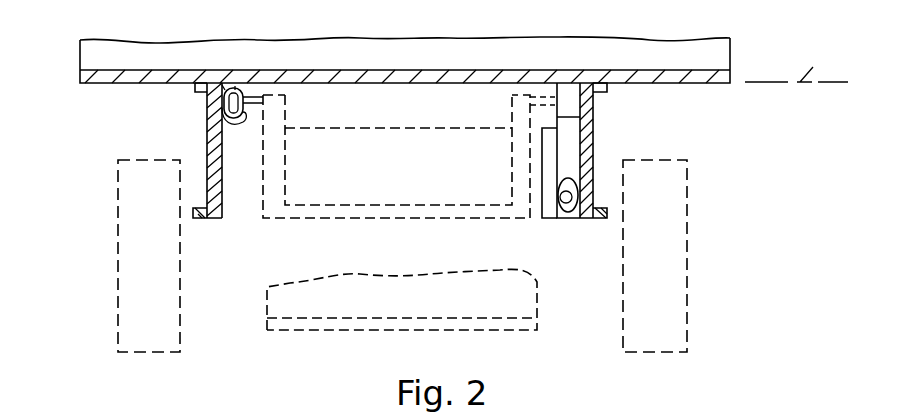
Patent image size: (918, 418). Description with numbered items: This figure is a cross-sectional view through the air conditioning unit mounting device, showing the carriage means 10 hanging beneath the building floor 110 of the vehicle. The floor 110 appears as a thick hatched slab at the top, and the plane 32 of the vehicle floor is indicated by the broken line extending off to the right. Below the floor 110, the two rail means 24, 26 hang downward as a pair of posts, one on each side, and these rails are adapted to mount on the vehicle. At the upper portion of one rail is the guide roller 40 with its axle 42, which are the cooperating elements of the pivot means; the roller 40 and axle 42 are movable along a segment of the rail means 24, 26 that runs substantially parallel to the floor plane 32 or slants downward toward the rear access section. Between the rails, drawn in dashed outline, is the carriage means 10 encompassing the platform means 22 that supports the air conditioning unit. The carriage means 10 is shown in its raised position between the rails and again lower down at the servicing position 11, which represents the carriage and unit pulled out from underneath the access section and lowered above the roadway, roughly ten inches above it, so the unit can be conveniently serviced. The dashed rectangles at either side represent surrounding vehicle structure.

The carriage means 10 is at (262, 212).
The servicing position 11 is at (267, 293).
The platform means 22 is at (334, 205).
The rail means 24 is at (565, 213).
The rail means 26 is at (237, 126).
The plane of the vehicle floor 32 is at (796, 64).
The guide roller 40 is at (230, 88).
The axle 42 is at (258, 100).
The building floor 110 is at (668, 66).